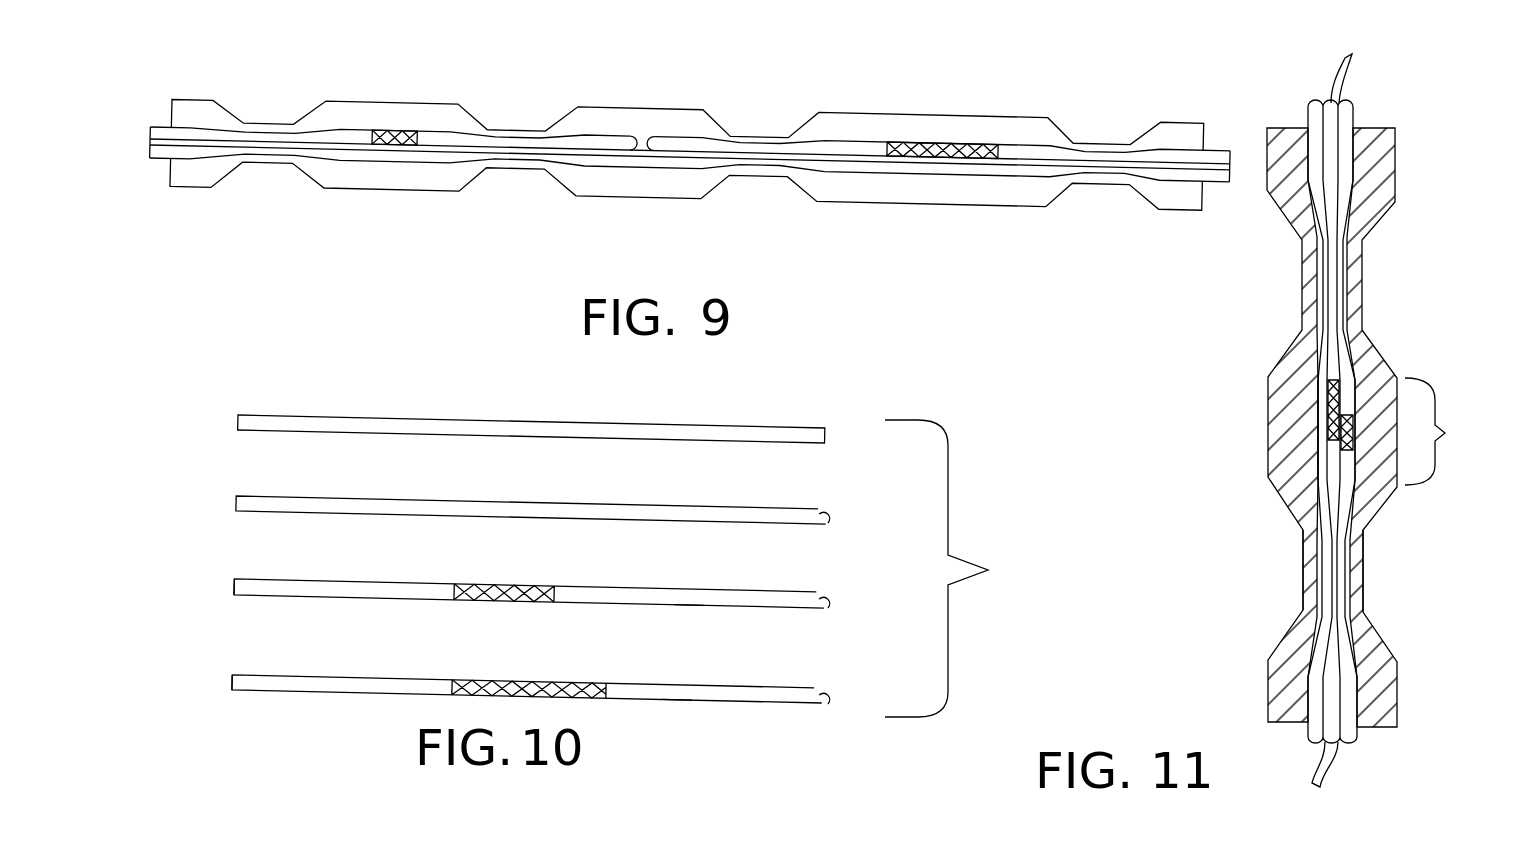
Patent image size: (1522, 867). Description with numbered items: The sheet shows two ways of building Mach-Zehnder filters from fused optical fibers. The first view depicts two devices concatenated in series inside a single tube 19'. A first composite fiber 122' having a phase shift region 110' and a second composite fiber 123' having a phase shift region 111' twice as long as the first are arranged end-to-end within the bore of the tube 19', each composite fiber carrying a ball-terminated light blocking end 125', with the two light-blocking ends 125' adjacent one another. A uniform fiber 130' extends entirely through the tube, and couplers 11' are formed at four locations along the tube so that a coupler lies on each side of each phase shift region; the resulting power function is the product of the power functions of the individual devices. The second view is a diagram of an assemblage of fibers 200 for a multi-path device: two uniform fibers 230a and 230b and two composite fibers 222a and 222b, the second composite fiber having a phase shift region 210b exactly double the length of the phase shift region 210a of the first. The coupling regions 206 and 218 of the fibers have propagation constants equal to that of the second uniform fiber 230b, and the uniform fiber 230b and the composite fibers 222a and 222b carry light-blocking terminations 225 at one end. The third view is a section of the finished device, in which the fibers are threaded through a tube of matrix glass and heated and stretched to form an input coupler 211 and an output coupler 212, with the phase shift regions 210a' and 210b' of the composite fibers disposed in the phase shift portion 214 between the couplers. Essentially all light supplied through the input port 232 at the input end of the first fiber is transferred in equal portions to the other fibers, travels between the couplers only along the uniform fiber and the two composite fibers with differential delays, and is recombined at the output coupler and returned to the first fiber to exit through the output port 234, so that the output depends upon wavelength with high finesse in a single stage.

In FIG. 9, the tube 19' is at (687, 152).
In FIG. 9, the couplers 11' is at (687, 176).
In FIG. 9, the first composite fiber 122' is at (390, 90).
In FIG. 9, the second composite fiber 123' is at (942, 104).
In FIG. 9, the phase shift region 110' is at (446, 105).
In FIG. 9, the phase shift region 111' is at (950, 108).
In FIG. 9, the ball-terminated light blocking end 125' is at (636, 97).
In FIG. 9, the uniform fiber 130' is at (690, 187).
In FIG. 10, the first uniform fiber 230a is at (372, 411).
In FIG. 11, the first uniform fiber 230a is at (1330, 788).
In FIG. 10, the second uniform fiber 230b is at (372, 491).
In FIG. 11, the second uniform fiber 230b is at (1320, 473).
In FIG. 10, the first composite fiber 222a is at (370, 576).
In FIG. 11, the first composite fiber 222a is at (1357, 462).
In FIG. 10, the second composite fiber 222b is at (370, 673).
In FIG. 11, the second composite fiber 222b is at (1333, 488).
In FIG. 10, the phase shift region 210a is at (547, 575).
In FIG. 10, the phase shift region 210b is at (554, 671).
In FIG. 10, the coupling region 206 is at (325, 598).
In FIG. 10, the coupling region 218 is at (690, 608).
In FIG. 10, the light-blocking termination 225 is at (820, 508).
In FIG. 11, the light-blocking termination 225 is at (1312, 100).
In FIG. 10, the assemblage of fibers 200 is at (966, 568).
In FIG. 11, the output coupler 212 is at (1362, 278).
In FIG. 11, the input coupler 211 is at (1363, 570).
In FIG. 11, the output port 234 is at (1350, 46).
In FIG. 11, the phase shift region 210b' is at (1251, 394).
In FIG. 11, the phase shift region 210a' is at (1264, 440).
In FIG. 11, the phase shift portion 214 is at (1455, 431).
In FIG. 11, the input port 232 is at (1312, 786).